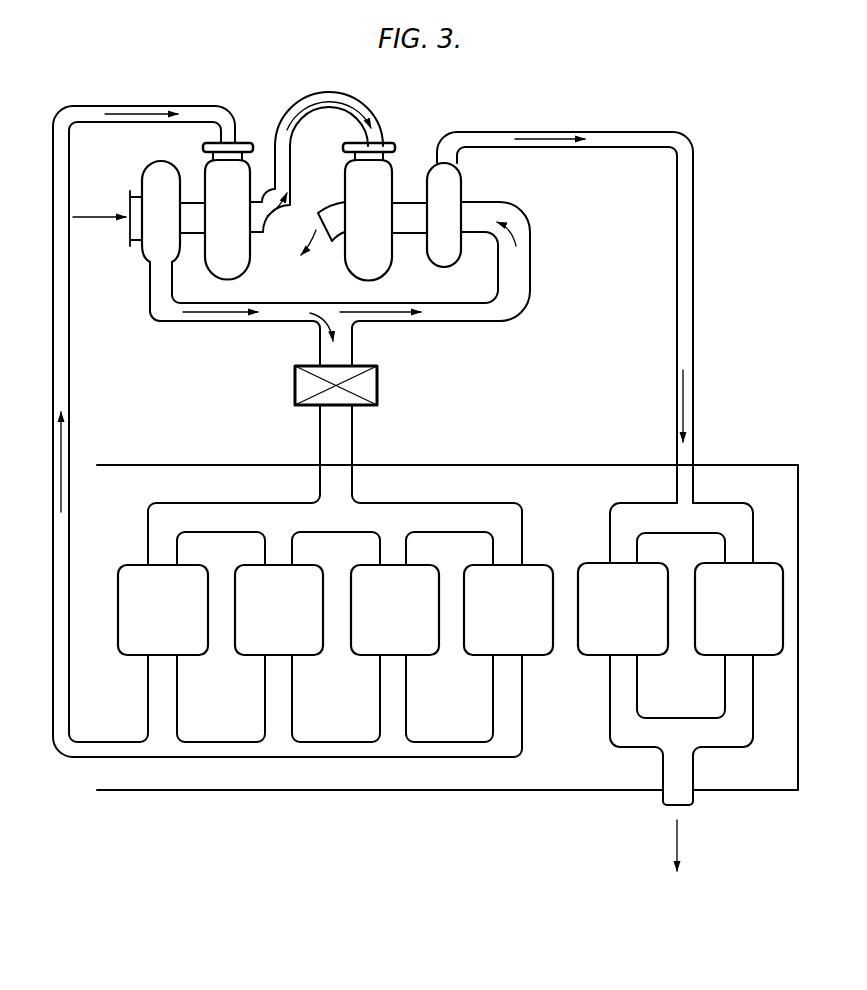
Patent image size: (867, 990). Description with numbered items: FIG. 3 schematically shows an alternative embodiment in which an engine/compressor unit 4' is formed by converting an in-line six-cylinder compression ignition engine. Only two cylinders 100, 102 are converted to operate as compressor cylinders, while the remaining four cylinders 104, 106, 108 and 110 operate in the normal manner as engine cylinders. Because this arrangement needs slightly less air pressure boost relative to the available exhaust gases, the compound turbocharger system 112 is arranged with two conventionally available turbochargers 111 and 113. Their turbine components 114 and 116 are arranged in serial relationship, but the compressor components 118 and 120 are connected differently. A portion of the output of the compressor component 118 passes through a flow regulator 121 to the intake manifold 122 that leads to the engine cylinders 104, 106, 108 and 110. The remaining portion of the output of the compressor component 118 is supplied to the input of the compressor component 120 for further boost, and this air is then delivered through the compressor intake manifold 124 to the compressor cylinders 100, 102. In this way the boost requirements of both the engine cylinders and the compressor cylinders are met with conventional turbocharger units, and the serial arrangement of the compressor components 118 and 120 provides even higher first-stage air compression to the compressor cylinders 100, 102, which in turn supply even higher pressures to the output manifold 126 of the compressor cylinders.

The engine/compressor unit 4' is at (447, 610).
The compressor cylinder 100 is at (647, 567).
The compressor cylinder 102 is at (718, 653).
The engine cylinder 104 is at (190, 568).
The engine cylinder 106 is at (308, 568).
The engine cylinder 108 is at (423, 565).
The engine cylinder 110 is at (530, 567).
The turbocharger 111 is at (139, 293).
The compound turbocharger system 112 is at (409, 131).
The turbocharger 113 is at (424, 264).
The turbine component 114 is at (251, 170).
The turbine component 116 is at (345, 264).
The compressor component 118 is at (143, 170).
The compressor component 120 is at (467, 179).
The flow regulator 121 is at (295, 386).
The intake manifold 122 is at (477, 503).
The compressor intake manifold 124 is at (722, 507).
The output manifold 126 is at (712, 740).